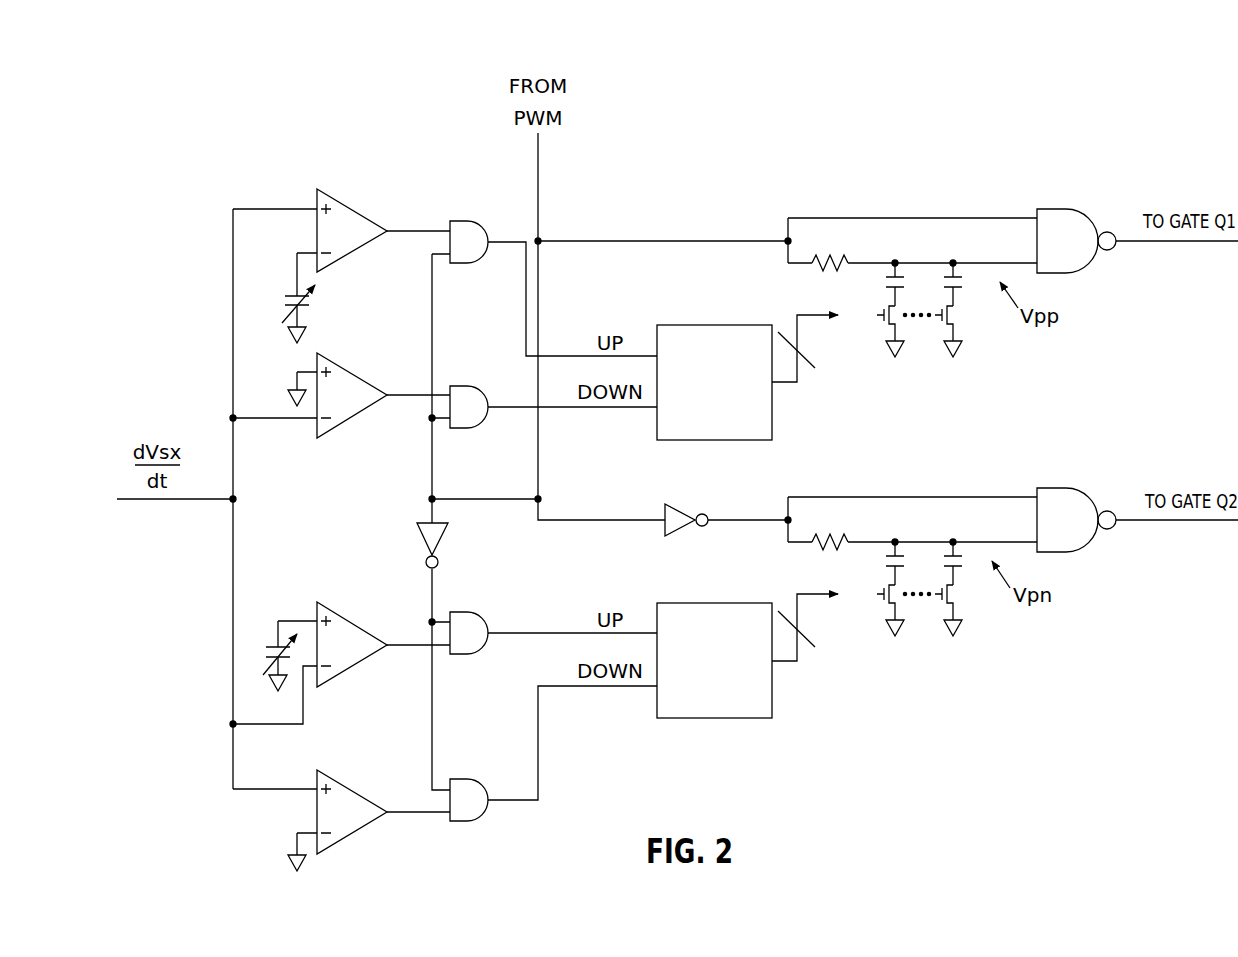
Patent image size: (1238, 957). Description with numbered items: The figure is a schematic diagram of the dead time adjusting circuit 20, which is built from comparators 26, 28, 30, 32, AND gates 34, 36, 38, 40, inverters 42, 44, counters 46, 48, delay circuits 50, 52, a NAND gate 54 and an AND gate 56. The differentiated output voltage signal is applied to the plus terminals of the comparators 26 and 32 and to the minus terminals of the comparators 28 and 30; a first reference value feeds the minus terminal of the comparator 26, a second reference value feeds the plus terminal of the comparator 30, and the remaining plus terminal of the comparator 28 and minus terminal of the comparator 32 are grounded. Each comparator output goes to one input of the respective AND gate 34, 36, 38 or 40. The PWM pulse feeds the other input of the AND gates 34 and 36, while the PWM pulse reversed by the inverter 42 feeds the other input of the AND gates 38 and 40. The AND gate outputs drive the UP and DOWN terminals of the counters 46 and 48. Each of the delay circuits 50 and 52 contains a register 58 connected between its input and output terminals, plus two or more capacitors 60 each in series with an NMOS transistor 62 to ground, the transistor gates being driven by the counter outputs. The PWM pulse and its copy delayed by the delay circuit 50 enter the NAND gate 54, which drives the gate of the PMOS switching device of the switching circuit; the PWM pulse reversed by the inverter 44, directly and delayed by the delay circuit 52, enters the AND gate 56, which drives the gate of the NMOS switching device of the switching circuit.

The dead time adjusting circuit 20 is at (1150, 130).
The comparator 26 is at (360, 222).
The comparator 28 is at (360, 388).
The comparator 30 is at (357, 632).
The comparator 32 is at (360, 800).
The AND gate 34 is at (463, 222).
The AND gate 36 is at (463, 387).
The AND gate 38 is at (463, 612).
The AND gate 40 is at (463, 779).
The inverter 42 is at (440, 528).
The inverter 44 is at (672, 510).
The counter 46 is at (773, 418).
The counter 48 is at (745, 720).
The delay circuit 50 is at (1008, 383).
The delay circuit 52 is at (1008, 662).
The NAND gate 54 is at (1081, 272).
The AND gate 56 is at (1067, 496).
The register 58 is at (815, 275).
The capacitor 60 is at (958, 290).
The NMOS transistor 62 is at (883, 321).